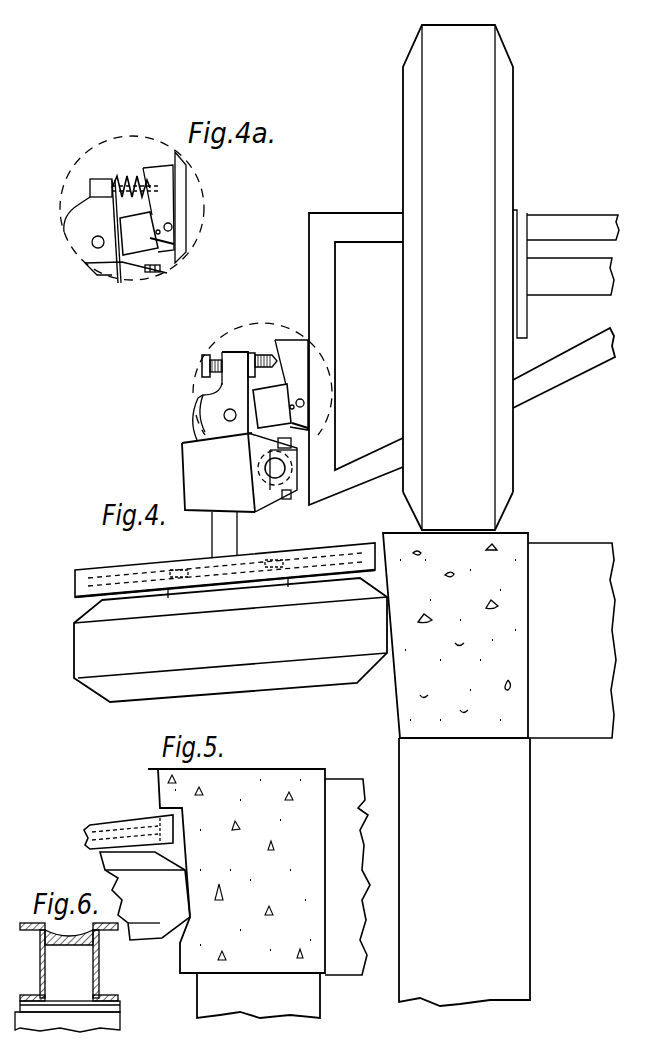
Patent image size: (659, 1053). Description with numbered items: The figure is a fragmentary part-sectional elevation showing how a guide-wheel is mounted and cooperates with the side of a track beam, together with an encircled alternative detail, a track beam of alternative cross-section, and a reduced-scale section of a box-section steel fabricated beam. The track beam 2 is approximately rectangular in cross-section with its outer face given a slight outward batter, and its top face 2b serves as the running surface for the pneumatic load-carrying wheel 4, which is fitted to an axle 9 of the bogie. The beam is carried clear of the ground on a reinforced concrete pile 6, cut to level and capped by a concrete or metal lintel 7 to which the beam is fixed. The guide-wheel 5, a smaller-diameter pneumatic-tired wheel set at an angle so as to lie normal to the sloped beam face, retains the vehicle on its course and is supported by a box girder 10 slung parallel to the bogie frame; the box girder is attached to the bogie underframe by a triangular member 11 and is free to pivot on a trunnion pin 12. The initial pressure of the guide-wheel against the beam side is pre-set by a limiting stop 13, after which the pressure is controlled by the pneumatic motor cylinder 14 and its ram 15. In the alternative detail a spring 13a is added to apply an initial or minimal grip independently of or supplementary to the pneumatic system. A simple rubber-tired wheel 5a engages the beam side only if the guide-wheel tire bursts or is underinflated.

In FIG. 4, the track beam 2 is at (410, 683).
In FIG. 4, the top face of beam 2b is at (523, 533).
In FIG. 5, the top face of beam 2b is at (273, 769).
In FIG. 4, the load-carrying wheel 4 is at (482, 50).
In FIG. 4, the guide-wheel 5 is at (95, 638).
In FIG. 5, the guide-wheel 5 is at (158, 943).
In FIG. 4, the simple wheel 5a is at (113, 568).
In FIG. 5, the simple wheel 5a is at (123, 825).
In FIG. 4, the pile 6 is at (520, 947).
In FIG. 5, the pile 6 is at (258, 995).
In FIG. 4, the lintel 7 is at (585, 552).
In FIG. 5, the lintel 7 is at (350, 968).
In FIG. 4, the axle 9 is at (560, 283).
In FIG. 4A, the box girder 10 is at (113, 273).
In FIG. 4, the box girder 10 is at (200, 472).
In FIG. 4, the triangular member 11 is at (321, 233).
In FIG. 4, the trunnion pin 12 is at (274, 483).
In FIG. 4, the limiting stop 13 is at (266, 350).
In FIG. 4A, the spring 13a is at (123, 179).
In FIG. 4A, the pneumatic motor cylinder 14 is at (143, 230).
In FIG. 4, the pneumatic motor cylinder 14 is at (278, 407).
In FIG. 4A, the ram 15 is at (84, 222).
In FIG. 4, the ram 15 is at (205, 390).